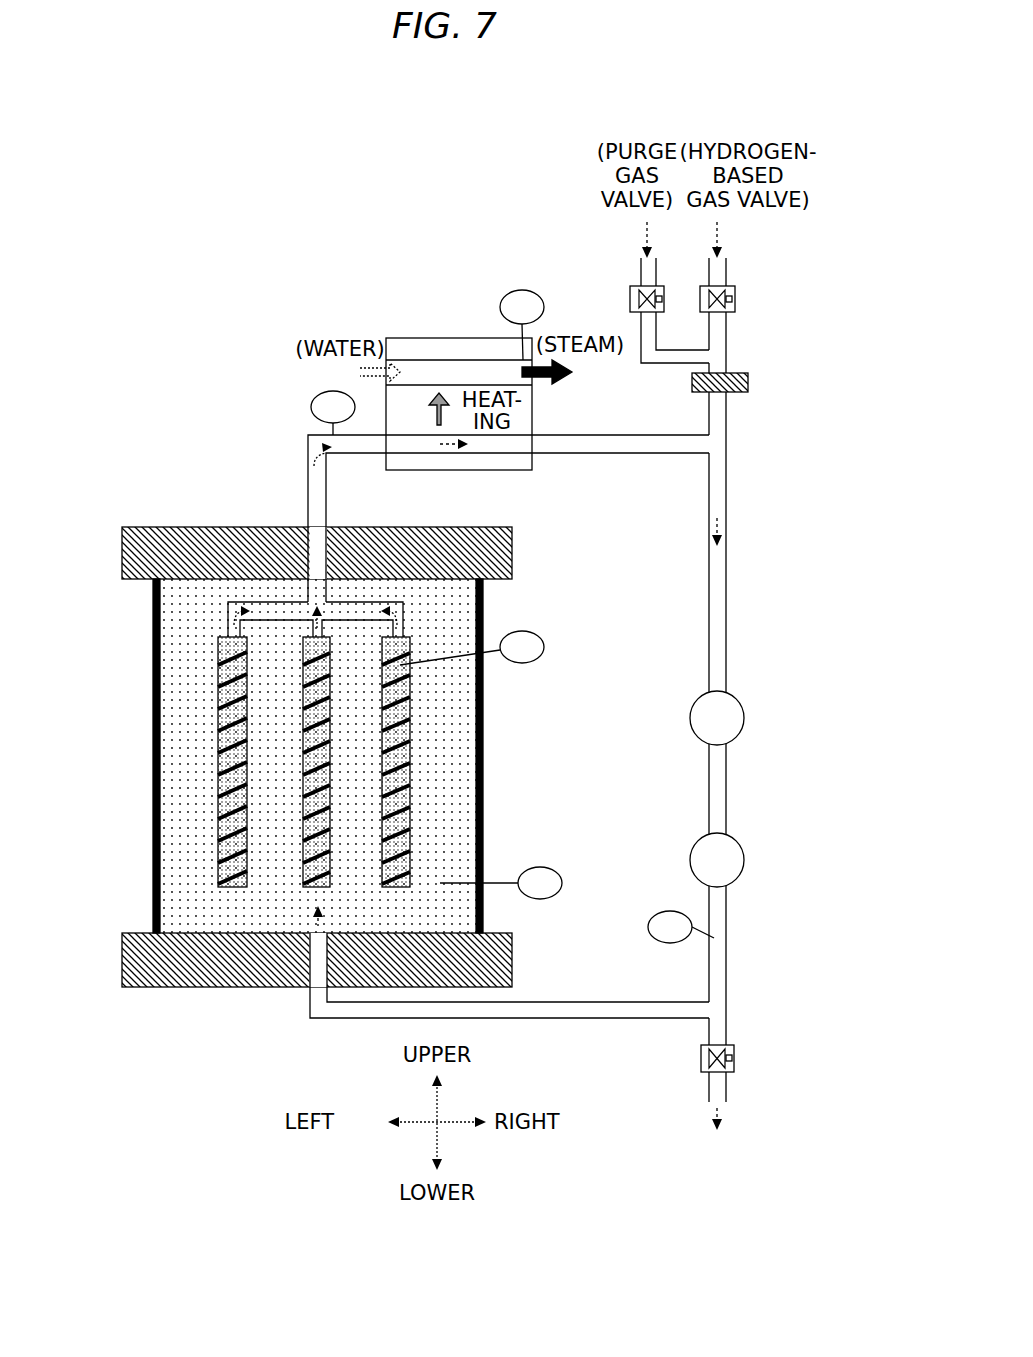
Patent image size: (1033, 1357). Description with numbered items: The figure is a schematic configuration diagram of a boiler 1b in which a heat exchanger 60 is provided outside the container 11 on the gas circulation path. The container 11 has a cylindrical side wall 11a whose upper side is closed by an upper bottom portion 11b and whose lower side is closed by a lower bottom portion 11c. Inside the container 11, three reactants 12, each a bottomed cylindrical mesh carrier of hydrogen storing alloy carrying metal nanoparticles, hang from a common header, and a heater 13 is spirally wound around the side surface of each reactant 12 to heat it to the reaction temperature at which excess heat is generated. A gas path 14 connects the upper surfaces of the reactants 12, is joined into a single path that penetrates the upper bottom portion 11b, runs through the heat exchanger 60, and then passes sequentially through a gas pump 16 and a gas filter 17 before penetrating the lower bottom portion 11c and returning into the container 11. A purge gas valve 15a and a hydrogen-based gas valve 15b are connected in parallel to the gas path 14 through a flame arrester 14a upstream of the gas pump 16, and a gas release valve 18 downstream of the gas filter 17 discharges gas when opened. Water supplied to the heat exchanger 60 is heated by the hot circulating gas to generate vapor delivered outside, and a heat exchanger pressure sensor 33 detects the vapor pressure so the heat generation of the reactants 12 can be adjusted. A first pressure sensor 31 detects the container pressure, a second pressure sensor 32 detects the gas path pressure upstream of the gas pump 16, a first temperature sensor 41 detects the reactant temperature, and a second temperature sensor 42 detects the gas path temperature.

The boiler 1b is at (722, 116).
The container 11 is at (222, 517).
The side wall 11a is at (152, 752).
The upper bottom portion 11b is at (141, 528).
The lower bottom portion 11c is at (145, 988).
The reactant 12 is at (228, 888).
The heater 13 is at (237, 888).
The gas path 14 is at (308, 470).
The flame arrester 14a is at (738, 393).
The purge gas valve 15a is at (630, 298).
The hydrogen-based gas valve 15b is at (757, 287).
The gas pump 16 is at (699, 702).
The gas filter 17 is at (699, 842).
The gas release valve 18 is at (701, 1060).
The first pressure sensor 31 is at (556, 868).
The second pressure sensor 32 is at (316, 401).
The heat exchanger pressure sensor 33 is at (511, 294).
The first temperature sensor 41 is at (542, 640).
The second temperature sensor 42 is at (670, 944).
The heat exchanger 60 is at (441, 338).